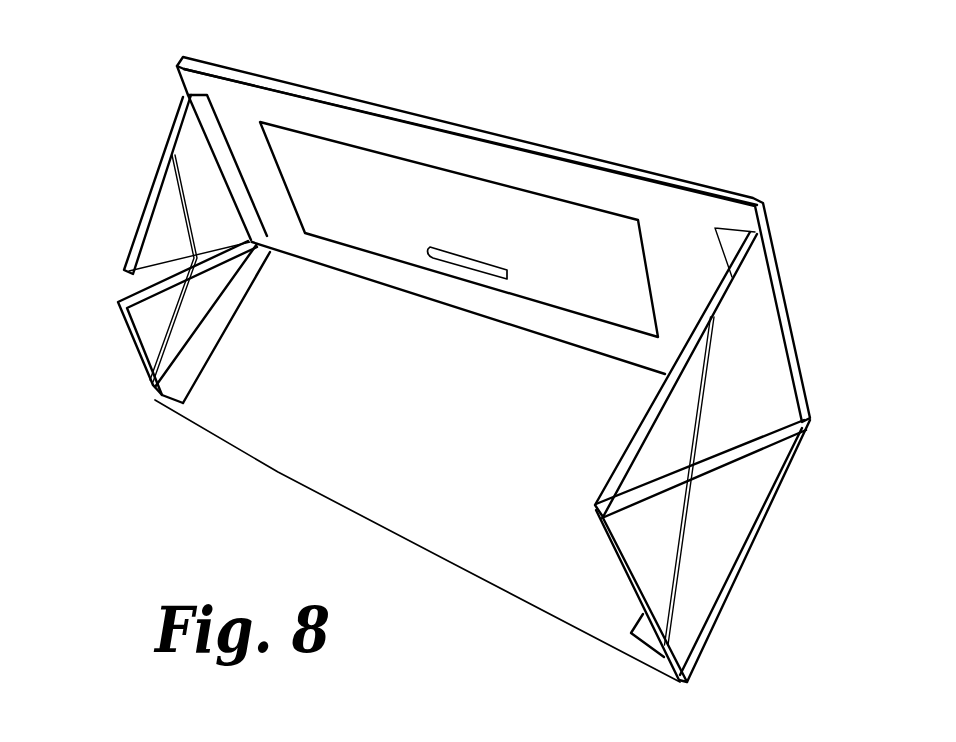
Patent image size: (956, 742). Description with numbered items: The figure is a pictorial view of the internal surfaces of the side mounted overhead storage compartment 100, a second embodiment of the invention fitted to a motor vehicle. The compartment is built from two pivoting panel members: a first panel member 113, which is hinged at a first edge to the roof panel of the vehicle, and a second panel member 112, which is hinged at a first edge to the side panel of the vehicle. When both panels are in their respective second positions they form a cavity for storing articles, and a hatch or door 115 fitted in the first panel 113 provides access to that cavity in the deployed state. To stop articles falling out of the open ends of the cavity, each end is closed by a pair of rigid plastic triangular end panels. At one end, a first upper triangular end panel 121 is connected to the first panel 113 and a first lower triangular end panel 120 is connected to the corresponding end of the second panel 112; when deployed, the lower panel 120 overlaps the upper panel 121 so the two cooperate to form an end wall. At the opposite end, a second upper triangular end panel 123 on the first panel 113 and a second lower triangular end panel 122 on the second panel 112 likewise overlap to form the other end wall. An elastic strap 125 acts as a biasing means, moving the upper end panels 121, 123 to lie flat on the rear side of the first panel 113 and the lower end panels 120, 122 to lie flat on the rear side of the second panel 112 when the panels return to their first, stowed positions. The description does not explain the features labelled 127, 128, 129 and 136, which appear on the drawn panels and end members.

The overhead storage compartment 100 is at (338, 96).
The second panel member 112 is at (357, 514).
The first panel member 113 is at (638, 165).
The hatch or door 115 is at (458, 168).
The first lower triangular end panel 120 is at (737, 462).
The first upper triangular end panel 121 is at (648, 402).
The second lower triangular end panel 122 is at (125, 318).
The second upper triangular end panel 123 is at (164, 155).
The elastic strap 125 is at (180, 203).
The foot 127 is at (157, 395).
The tab 128 is at (728, 242).
The foot tab 129 is at (632, 632).
The flap 136 is at (207, 112).